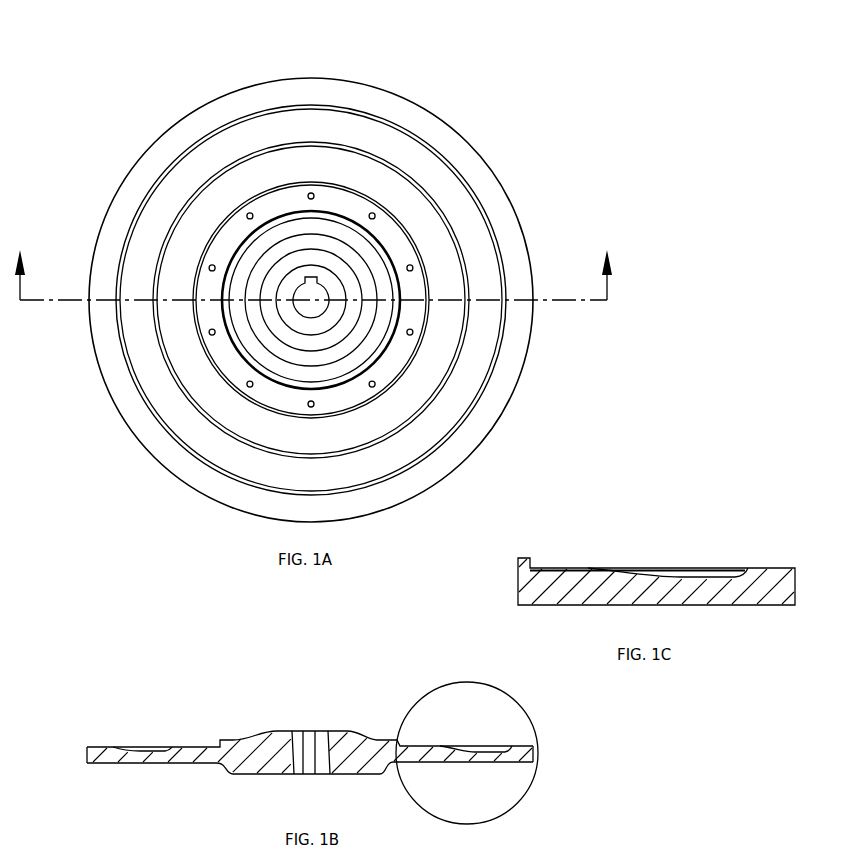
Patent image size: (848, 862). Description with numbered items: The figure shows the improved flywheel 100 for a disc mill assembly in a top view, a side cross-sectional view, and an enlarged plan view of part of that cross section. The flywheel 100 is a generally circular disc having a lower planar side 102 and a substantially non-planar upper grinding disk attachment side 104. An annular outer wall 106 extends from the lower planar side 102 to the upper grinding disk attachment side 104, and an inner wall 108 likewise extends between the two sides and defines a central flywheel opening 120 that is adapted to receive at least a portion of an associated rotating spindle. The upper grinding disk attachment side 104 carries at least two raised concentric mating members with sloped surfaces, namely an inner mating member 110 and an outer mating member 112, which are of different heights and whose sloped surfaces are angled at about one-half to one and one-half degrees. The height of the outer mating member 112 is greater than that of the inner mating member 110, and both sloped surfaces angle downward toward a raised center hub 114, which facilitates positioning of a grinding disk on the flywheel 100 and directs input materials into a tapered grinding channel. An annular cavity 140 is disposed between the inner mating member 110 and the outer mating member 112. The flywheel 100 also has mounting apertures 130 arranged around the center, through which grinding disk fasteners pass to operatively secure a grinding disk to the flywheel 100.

In FIG. 1A, the flywheel 100 is at (165, 75).
In FIG. 1B, the lower planar side 102 is at (140, 763).
In FIG. 1B, the upper grinding disk attachment side 104 is at (140, 747).
In FIG. 1B, the annular outer wall 106 is at (87, 757).
In FIG. 1B, the inner wall 108 is at (300, 758).
In FIG. 1A, the inner mating member 110 is at (342, 203).
In FIG. 1C, the inner mating member 110 is at (558, 570).
In FIG. 1A, the outer mating member 112 is at (448, 140).
In FIG. 1C, the outer mating member 112 is at (767, 568).
In FIG. 1B, the raised center hub 114 is at (275, 730).
In FIG. 1A, the central flywheel opening 120 is at (315, 295).
In FIG. 1A, the mounting apertures 130 is at (247, 386).
In FIG. 1C, the annular cavity 140 is at (677, 575).